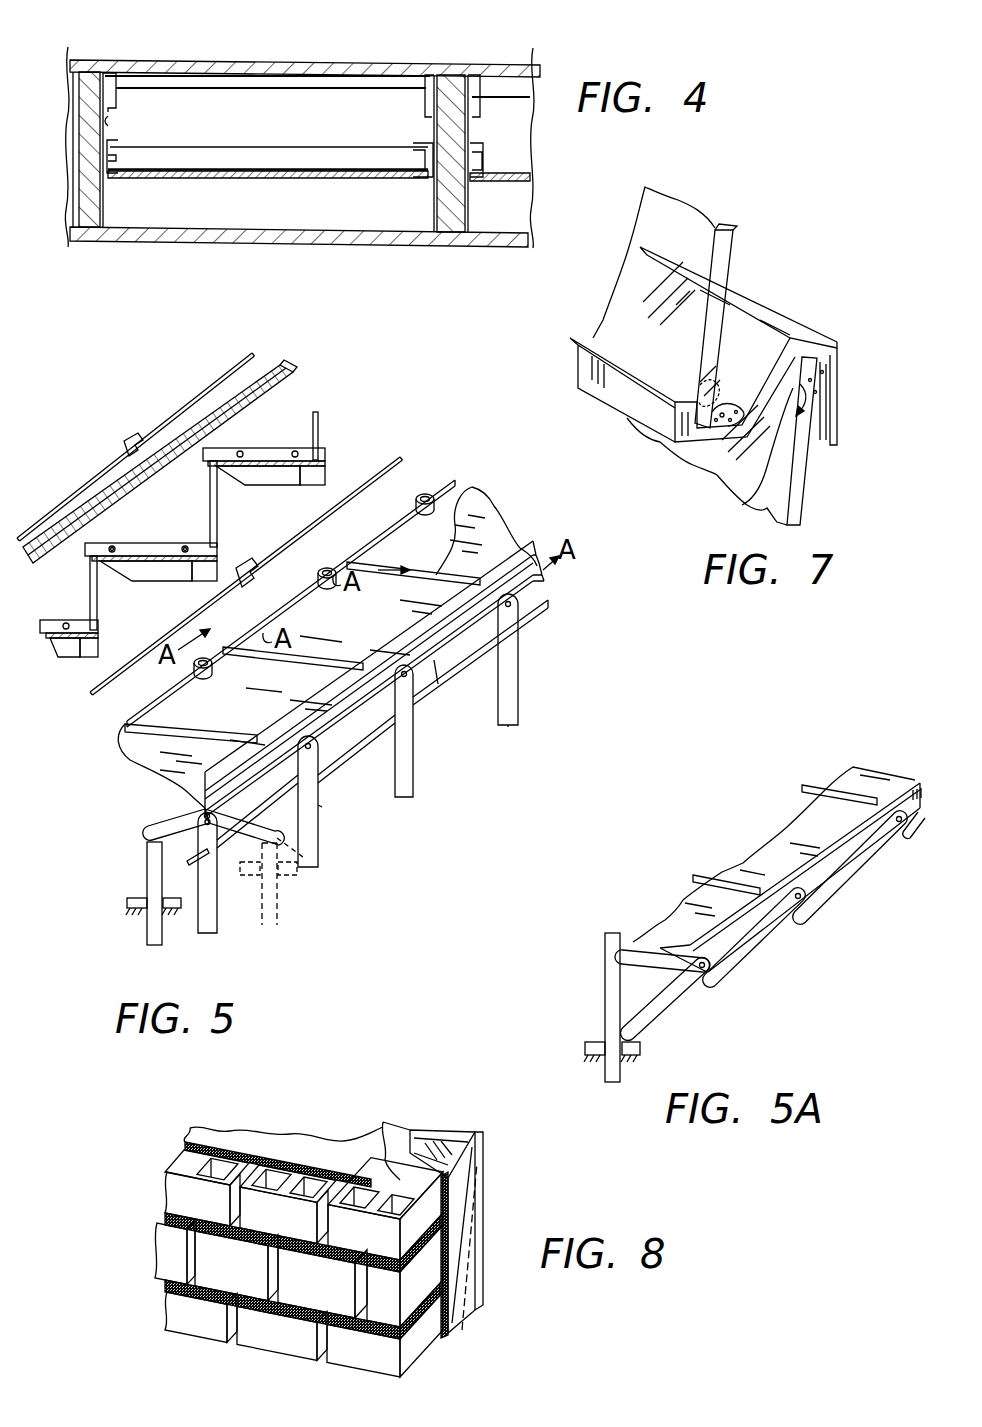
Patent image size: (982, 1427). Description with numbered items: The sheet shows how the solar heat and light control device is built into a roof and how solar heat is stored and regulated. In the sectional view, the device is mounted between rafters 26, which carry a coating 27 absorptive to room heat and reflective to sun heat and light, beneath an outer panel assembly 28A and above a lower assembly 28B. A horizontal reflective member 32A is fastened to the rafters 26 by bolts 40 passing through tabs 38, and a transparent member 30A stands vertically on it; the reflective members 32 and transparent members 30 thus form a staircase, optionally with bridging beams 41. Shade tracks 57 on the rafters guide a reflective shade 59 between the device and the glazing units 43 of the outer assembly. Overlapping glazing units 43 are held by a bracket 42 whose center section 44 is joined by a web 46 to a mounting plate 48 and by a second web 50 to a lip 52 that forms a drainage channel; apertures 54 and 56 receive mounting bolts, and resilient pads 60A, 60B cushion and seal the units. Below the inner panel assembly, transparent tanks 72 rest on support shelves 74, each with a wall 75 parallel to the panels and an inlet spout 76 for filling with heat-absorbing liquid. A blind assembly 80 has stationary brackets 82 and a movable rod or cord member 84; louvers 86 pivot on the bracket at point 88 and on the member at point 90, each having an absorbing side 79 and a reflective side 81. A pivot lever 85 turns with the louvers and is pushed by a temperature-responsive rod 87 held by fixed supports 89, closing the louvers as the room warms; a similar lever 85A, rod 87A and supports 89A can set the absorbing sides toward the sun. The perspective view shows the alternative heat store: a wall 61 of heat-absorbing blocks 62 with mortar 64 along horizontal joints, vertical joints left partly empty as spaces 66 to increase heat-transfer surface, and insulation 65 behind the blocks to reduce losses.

In FIG. 4, the rafters 26 is at (92, 76).
In FIG. 4, the coating 27 is at (108, 124).
In FIG. 4, the outer panel assembly 28A is at (180, 61).
In FIG. 4, the inner panel assembly 28B is at (405, 246).
In FIG. 4, the transparent member 30A is at (258, 98).
In FIG. 4, the horizontal reflective member 32A is at (275, 178).
In FIG. 4, the tabs 38 is at (425, 178).
In FIG. 5, the tabs 38 is at (136, 556).
In FIG. 4, the bolts 40 is at (418, 150).
In FIG. 5, the bolts 40 is at (115, 549).
In FIG. 4, the shade tracks 57 is at (120, 93).
In FIG. 5, the shade tracks 57 is at (287, 375).
In FIG. 5, the glazing units 43 is at (185, 403).
In FIG. 7, the glazing units 43 is at (722, 255).
In FIG. 5, the bracket 42 is at (128, 440).
In FIG. 5, the reflective members 32 is at (278, 448).
In FIG. 5, the shade 59 is at (165, 462).
In FIG. 5, the transparent members 30 is at (217, 510).
In FIG. 5, the bridging beams 41 is at (322, 475).
In FIG. 5, the tanks 72 is at (303, 620).
In FIG. 5, the inlet spout 76 is at (328, 568).
In FIG. 5, the tank wall 75 is at (395, 530).
In FIG. 5, the support shelves 74 is at (118, 730).
In FIG. 5, the pivot point 88 is at (546, 585).
In FIG. 5, the pivot point 90 is at (520, 642).
In FIG. 5, the louvers 86 is at (512, 690).
In FIG. 5, the rod or cord member 84 is at (436, 684).
In FIG. 5, the blind assembly 80 is at (517, 728).
In FIG. 5, the brackets 82 is at (335, 722).
In FIG. 5, the absorbing side 79 is at (323, 807).
In FIG. 5, the reflective side 81 is at (302, 810).
In FIG. 5, the pivot lever 85 is at (150, 838).
In FIG. 5A, the pivot lever 85 is at (618, 957).
In FIG. 5, the second pivot lever 85A is at (308, 852).
In FIG. 5, the fixed supports 89 is at (127, 903).
In FIG. 5, the second fixed supports 89A is at (289, 878).
In FIG. 5, the rod 87 is at (157, 945).
In FIG. 5A, the rod 87 is at (605, 1005).
In FIG. 5, the second rod 87A is at (277, 922).
In FIG. 7, the web 46 is at (776, 313).
In FIG. 7, the aperture 54 is at (692, 385).
In FIG. 7, the resilient pad 60A is at (825, 377).
In FIG. 7, the aperture 56 is at (820, 396).
In FIG. 7, the mounting plate 48 is at (838, 425).
In FIG. 7, the lip 52 is at (630, 385).
In FIG. 7, the second web 50 is at (698, 433).
In FIG. 7, the center section 44 is at (775, 400).
In FIG. 7, the resilient pad 60B is at (748, 480).
In FIG. 8, the spaces 66 is at (250, 1170).
In FIG. 8, the mortar 64 is at (353, 1174).
In FIG. 8, the blocks 62 is at (178, 1190).
In FIG. 8, the insulation 65 is at (470, 1200).
In FIG. 8, the wall 61 is at (302, 1249).